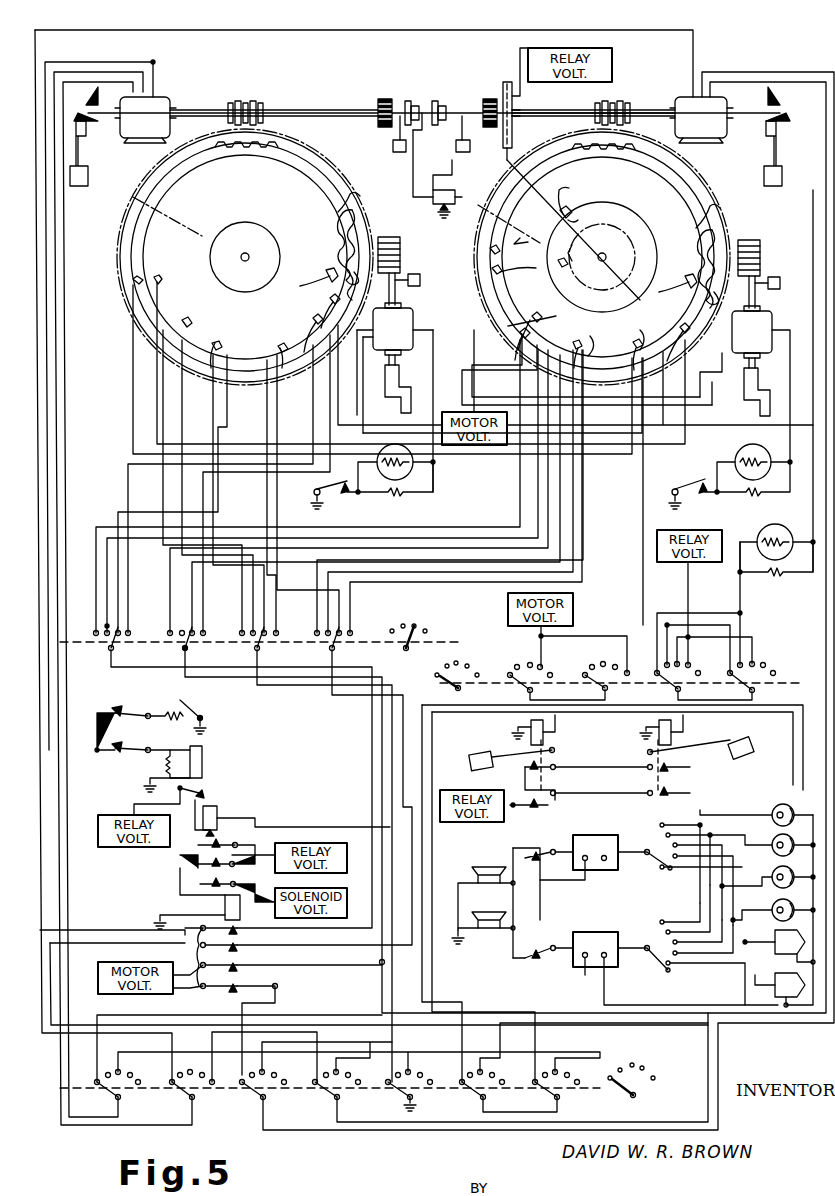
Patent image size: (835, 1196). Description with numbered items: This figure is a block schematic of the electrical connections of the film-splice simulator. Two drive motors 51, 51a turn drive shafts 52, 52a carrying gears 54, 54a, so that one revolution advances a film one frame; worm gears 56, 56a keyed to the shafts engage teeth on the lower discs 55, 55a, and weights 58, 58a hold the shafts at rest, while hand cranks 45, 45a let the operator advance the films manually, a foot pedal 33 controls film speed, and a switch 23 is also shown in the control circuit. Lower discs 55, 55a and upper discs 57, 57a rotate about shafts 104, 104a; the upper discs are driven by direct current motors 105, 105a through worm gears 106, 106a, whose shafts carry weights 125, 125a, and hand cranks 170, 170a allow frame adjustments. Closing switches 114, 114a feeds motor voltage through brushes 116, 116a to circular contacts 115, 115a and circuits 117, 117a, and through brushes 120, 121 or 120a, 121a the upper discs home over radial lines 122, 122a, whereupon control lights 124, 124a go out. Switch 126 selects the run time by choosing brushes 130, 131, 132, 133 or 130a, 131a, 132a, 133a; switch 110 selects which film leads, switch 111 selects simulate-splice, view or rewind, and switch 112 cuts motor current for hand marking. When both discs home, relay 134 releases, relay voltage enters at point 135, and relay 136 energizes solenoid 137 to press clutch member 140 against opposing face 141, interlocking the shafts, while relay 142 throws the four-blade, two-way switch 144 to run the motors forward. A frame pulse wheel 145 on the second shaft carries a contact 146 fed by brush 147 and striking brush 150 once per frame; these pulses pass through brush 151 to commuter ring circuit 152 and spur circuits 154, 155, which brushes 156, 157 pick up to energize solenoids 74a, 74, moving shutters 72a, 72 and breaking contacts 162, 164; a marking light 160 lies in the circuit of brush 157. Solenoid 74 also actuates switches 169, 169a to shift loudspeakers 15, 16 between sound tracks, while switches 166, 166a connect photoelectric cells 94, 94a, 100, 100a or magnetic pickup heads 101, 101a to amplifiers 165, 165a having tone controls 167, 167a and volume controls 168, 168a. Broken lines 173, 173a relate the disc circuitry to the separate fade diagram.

The loudspeaker 15 is at (484, 868).
The loudspeaker 16 is at (484, 913).
The switch 23 is at (122, 715).
The foot pedal 33 is at (193, 708).
The hand crank 45 is at (89, 165).
The hand crank 45a is at (776, 171).
The drive motor 51 is at (170, 98).
The drive motor 51a is at (716, 124).
The drive shaft 52 is at (303, 100).
The drive shaft 52a is at (546, 100).
The gear 54 is at (378, 103).
The gear 54a is at (486, 96).
The lower disc 55 is at (315, 164).
The lower disc 55a is at (703, 186).
The worm gear 56 is at (254, 102).
The worm gear 56a is at (610, 101).
The upper disc 57 is at (358, 220).
The upper disc 57a is at (737, 229).
The weight 58 is at (393, 139).
The weight 58a is at (455, 147).
The shutter 72 is at (474, 754).
The shutter 72a is at (746, 746).
The solenoid 74 is at (548, 735).
The solenoid 74a is at (676, 735).
The photoelectric cell 94 is at (783, 802).
The photoelectric cell 94a is at (778, 836).
The photoelectric cell 100 is at (778, 868).
The photoelectric cell 100a is at (772, 908).
The magnetic pickup head 101 is at (786, 950).
The magnetic pickup head 101a is at (774, 990).
The shaft 104 is at (260, 265).
The shaft 104a is at (618, 265).
The direct current motor 105 is at (412, 309).
The direct current motor 105a is at (767, 321).
The worm gear 106 is at (400, 243).
The worm gear 106a is at (760, 254).
The switch 110 is at (454, 690).
The switch 111 is at (634, 1096).
The switch 112 is at (136, 754).
The switch 114 is at (342, 481).
The switch 114a is at (699, 481).
The circular contact 115 is at (356, 200).
The circular contact 115a is at (720, 210).
The brush 116 is at (332, 300).
The brush 116a is at (513, 306).
The circuit 117 is at (326, 274).
The circuit 117a is at (690, 278).
The brush 120 is at (159, 277).
The brush 120a is at (518, 264).
The brush 121 is at (132, 281).
The brush 121a is at (491, 248).
The radial line 122 is at (134, 198).
The radial line 122a is at (494, 214).
The control light 124 is at (391, 453).
The control light 124a is at (752, 449).
The weight 125 is at (418, 274).
The weight 125a is at (776, 289).
The switch 126 is at (404, 649).
The brush 130 is at (186, 321).
The brush 130a is at (523, 331).
The brush 131 is at (217, 343).
The brush 131a is at (579, 343).
The brush 132 is at (276, 333).
The brush 132a is at (627, 344).
The brush 133 is at (312, 318).
The brush 133a is at (666, 314).
The relay 134 is at (201, 768).
The point 135 is at (203, 792).
The relay 136 is at (217, 812).
The solenoid 137 is at (447, 186).
The clutch member 140 is at (428, 78).
The opposing face 141 is at (440, 96).
The relay 142 is at (237, 919).
The four-blade, two-way switch 144 is at (196, 948).
The frame pulse wheel 145 is at (503, 146).
The contact 146 is at (504, 78).
The brush 147 is at (513, 116).
The brush 150 is at (508, 164).
The brush 151 is at (577, 200).
The commuter ring circuit 152 is at (620, 202).
The spur circuit 154 is at (540, 232).
The spur circuit 155 is at (580, 218).
The brush 156 is at (566, 252).
The brush 157 is at (566, 262).
The light 160 is at (770, 528).
The contact 162 is at (676, 770).
The contact 164 is at (539, 804).
The amplifier 165 is at (608, 832).
The amplifier 165a is at (599, 932).
The switch 166 is at (652, 848).
The switch 166a is at (656, 952).
The tone control 167 is at (578, 872).
The tone control 167a is at (584, 974).
The volume control 168 is at (606, 868).
The volume control 168a is at (606, 970).
The switch 169 is at (545, 838).
The switch 169a is at (544, 958).
The hand crank 170 is at (402, 381).
The hand crank 170a is at (752, 381).
The broken line 173 is at (275, 229).
The broken line 173a is at (642, 238).